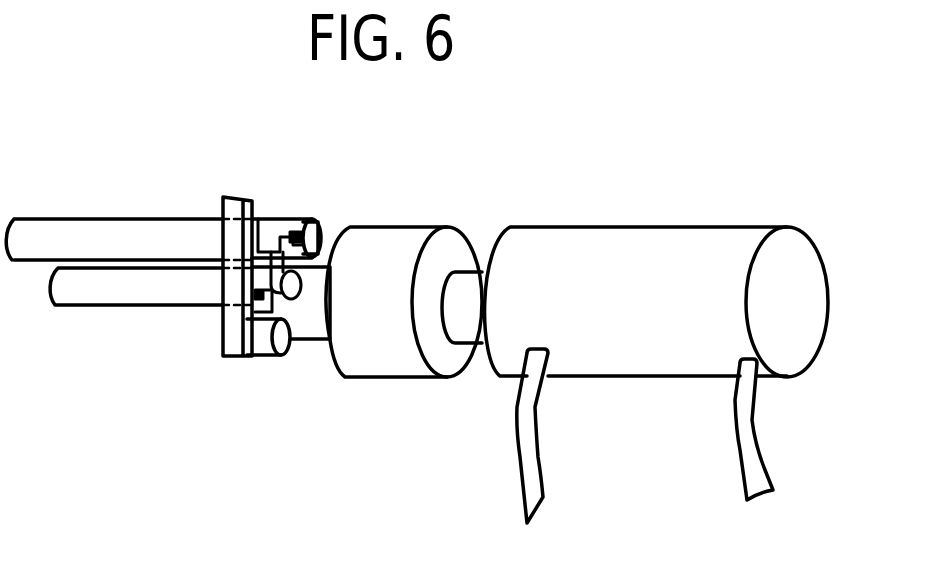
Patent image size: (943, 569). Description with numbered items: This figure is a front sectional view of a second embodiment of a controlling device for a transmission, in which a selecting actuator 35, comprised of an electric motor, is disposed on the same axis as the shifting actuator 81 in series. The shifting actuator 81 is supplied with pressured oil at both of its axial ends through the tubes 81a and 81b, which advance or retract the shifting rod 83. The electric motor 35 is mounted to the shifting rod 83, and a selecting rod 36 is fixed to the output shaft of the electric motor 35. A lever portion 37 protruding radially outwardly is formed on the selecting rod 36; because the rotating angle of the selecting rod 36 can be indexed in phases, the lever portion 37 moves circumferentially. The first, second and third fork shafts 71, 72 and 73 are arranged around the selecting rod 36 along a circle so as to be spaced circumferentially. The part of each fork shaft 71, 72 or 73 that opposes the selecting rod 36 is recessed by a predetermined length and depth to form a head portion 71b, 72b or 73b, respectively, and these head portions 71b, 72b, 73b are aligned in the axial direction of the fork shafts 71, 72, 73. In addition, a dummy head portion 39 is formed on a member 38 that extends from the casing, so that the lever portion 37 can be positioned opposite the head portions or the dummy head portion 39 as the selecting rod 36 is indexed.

The selecting actuator 35 is at (394, 234).
The selecting rod 36 is at (310, 326).
The lever portion 37 is at (279, 243).
The member 38 is at (223, 242).
The dummy head portion 39 is at (260, 345).
The first fork shaft 71 is at (108, 290).
The head portion 71b is at (222, 307).
The second fork shaft 72 is at (88, 233).
The head portion 72b is at (278, 247).
The third fork shaft 73 is at (325, 230).
The head portion 73b is at (315, 222).
The shifting actuator 81 is at (680, 234).
The tube 81a is at (527, 443).
The tube 81b is at (750, 438).
The shifting rod 83 is at (467, 288).